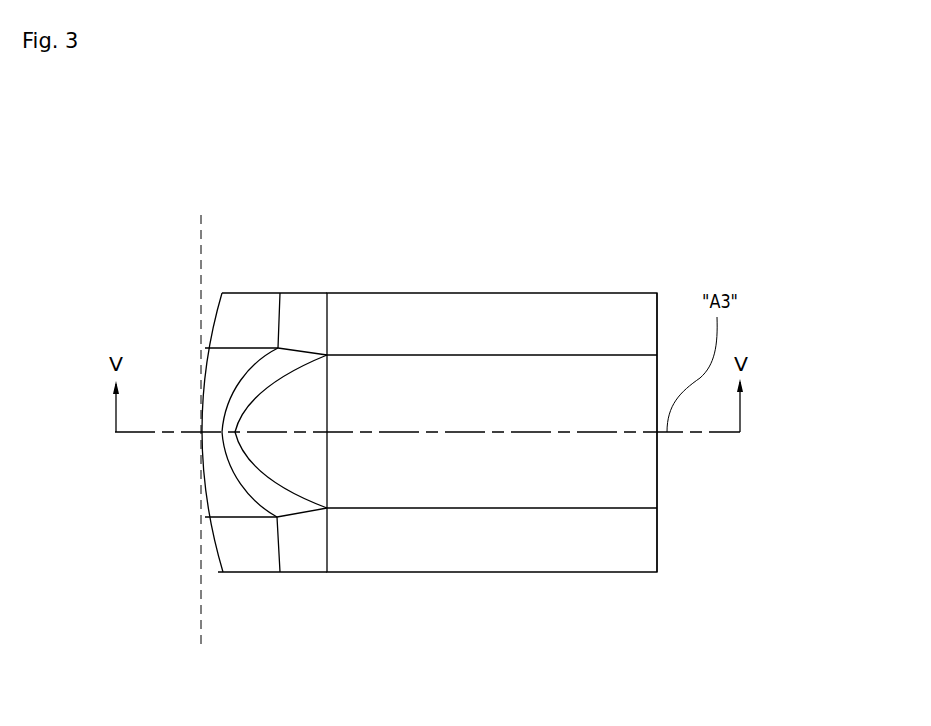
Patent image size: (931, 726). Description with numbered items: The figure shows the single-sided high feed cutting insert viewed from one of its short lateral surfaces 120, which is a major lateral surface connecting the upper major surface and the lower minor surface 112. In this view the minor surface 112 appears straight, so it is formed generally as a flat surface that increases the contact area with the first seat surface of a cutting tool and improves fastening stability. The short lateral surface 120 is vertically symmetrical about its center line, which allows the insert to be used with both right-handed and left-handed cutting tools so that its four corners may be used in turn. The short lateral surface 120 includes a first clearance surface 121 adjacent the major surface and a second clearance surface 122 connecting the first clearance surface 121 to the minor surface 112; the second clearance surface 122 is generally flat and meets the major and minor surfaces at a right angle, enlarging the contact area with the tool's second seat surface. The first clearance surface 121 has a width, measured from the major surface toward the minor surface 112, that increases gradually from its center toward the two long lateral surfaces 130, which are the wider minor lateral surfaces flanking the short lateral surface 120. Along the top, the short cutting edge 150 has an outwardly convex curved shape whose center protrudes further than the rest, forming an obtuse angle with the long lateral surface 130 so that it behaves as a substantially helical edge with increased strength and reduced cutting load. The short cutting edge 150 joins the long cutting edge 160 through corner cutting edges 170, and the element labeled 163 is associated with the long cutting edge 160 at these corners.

The minor surface 112 is at (662, 469).
The short lateral surface 120 is at (573, 395).
The first clearance surface 121 is at (230, 363).
The second clearance surface 122 is at (363, 395).
The long lateral surface 130 is at (492, 290).
The short cutting edge 150 is at (203, 352).
The long cutting edge 160 is at (257, 430).
The end cap part 163 is at (222, 293).
The corner cutting edge 170 is at (216, 316).